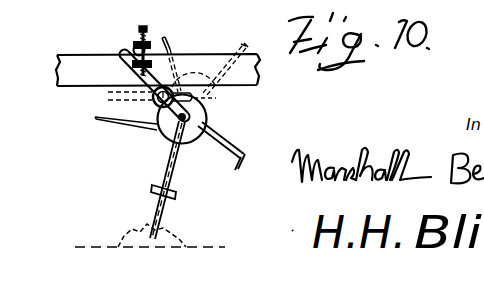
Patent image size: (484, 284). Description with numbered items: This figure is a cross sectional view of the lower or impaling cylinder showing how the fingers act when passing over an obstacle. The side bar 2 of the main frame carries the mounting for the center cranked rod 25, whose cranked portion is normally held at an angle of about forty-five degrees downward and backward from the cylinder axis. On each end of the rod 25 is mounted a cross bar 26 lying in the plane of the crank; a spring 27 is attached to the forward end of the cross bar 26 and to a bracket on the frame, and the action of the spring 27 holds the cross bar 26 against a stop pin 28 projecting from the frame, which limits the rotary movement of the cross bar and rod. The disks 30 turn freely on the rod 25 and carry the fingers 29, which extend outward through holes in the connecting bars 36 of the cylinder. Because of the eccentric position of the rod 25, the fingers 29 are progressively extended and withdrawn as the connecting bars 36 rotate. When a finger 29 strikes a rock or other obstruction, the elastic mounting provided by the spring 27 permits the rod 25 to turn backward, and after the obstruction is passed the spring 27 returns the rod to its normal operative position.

The side bar 2 is at (64, 79).
The center cranked rod 25 is at (201, 109).
The cross bar 26 is at (122, 88).
The spring 27 is at (138, 36).
The pin 28 is at (146, 38).
The finger 29 is at (161, 218).
The disk 30 is at (207, 127).
The connecting bar 36 is at (149, 188).